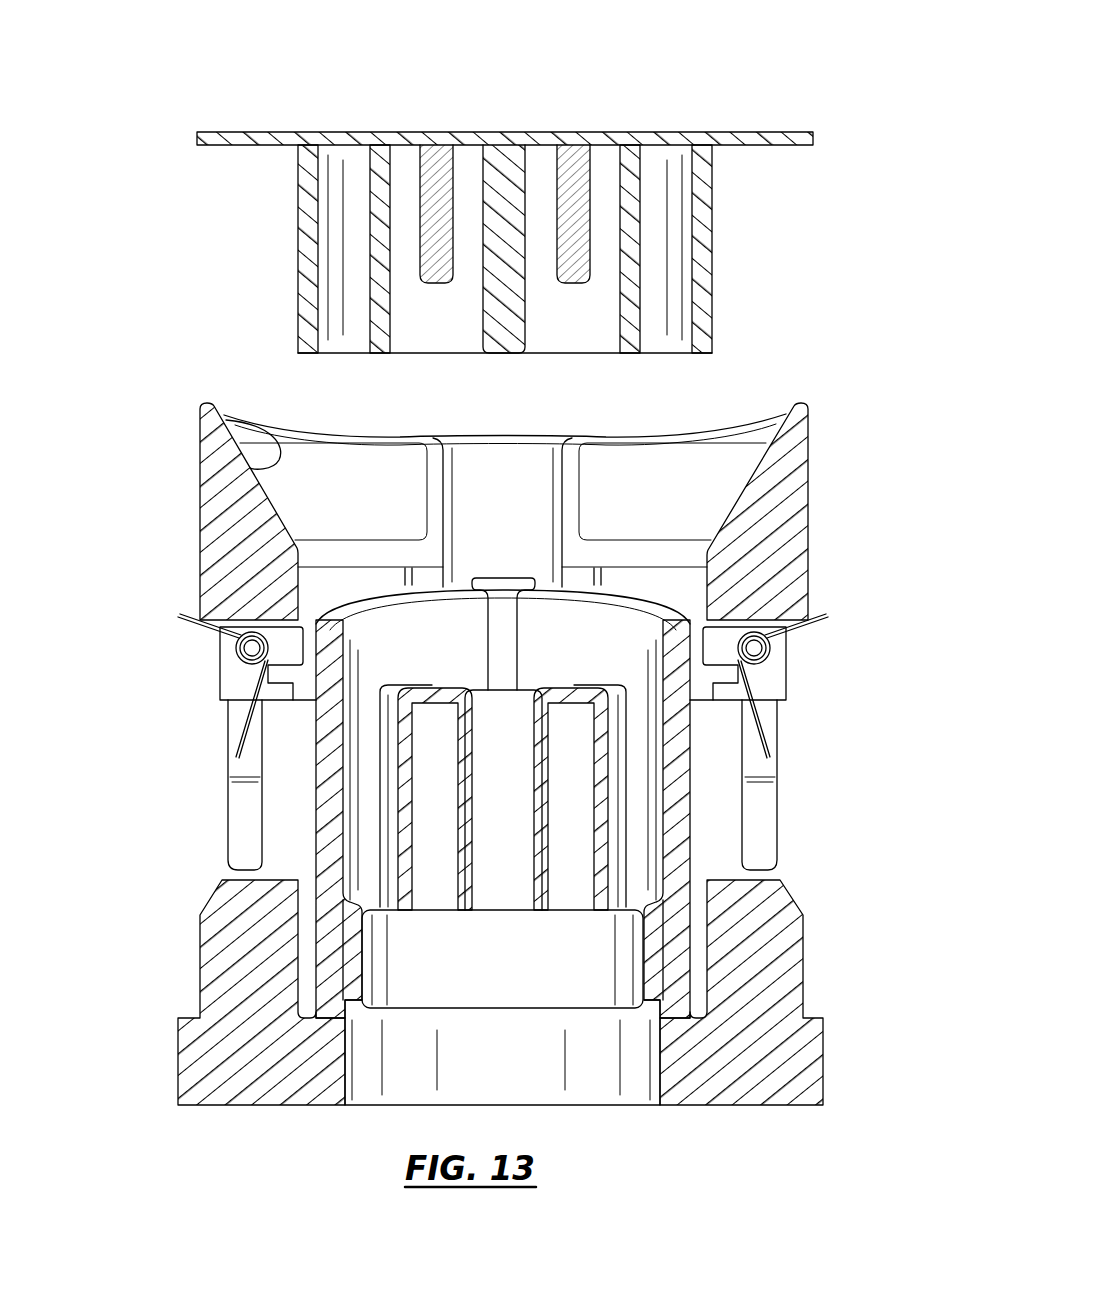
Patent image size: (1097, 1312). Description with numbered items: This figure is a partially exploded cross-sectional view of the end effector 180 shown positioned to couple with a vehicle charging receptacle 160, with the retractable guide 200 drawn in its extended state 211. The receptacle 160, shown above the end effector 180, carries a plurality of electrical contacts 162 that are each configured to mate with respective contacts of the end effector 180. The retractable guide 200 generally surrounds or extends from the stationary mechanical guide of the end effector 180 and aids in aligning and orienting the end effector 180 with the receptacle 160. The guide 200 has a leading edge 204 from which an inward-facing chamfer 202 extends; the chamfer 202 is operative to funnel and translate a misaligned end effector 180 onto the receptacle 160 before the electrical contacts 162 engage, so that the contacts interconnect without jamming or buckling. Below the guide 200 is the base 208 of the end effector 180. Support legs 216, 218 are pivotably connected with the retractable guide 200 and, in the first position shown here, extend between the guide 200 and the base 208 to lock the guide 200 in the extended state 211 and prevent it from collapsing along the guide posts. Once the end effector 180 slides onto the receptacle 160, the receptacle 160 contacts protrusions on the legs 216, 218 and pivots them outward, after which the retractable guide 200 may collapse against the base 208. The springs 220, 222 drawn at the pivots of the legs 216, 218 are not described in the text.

The vehicle charging receptacle 160 is at (803, 108).
The electrical contacts 162 is at (421, 163).
The end effector 180 is at (826, 429).
The retractable guide 200 is at (200, 507).
The inward-facing chamfer 202 is at (277, 433).
The leading edge 204 is at (207, 400).
The base 208 is at (805, 932).
The extended state 211 is at (139, 449).
The support leg 216 is at (238, 807).
The support leg 218 is at (779, 798).
The left latch spring 220 is at (266, 683).
The right latch spring 222 is at (788, 718).